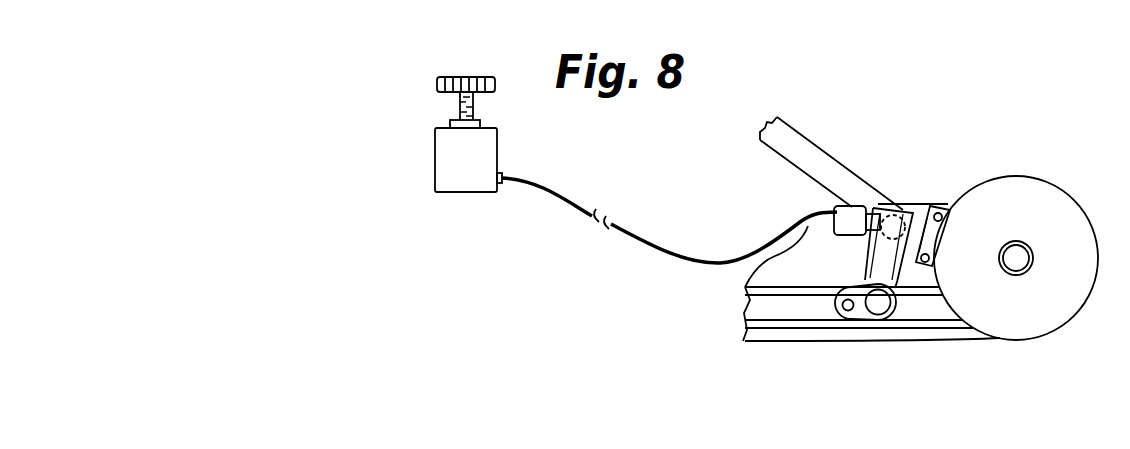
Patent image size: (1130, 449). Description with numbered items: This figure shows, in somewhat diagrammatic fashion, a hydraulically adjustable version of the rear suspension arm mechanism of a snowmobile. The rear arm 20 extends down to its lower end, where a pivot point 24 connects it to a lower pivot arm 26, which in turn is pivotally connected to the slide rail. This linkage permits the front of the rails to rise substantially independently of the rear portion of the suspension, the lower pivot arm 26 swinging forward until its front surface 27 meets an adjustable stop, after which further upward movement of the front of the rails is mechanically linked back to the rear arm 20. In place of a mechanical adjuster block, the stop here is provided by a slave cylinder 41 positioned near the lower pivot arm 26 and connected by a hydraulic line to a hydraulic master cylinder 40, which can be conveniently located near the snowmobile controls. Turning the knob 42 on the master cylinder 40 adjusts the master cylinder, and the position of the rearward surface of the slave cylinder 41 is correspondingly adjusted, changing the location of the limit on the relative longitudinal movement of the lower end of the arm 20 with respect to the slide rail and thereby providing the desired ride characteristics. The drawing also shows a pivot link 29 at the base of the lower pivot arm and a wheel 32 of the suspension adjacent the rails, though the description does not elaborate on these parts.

The rear arm 20 is at (830, 168).
The pivot point 24 is at (907, 204).
The lower pivot arm 26 is at (898, 266).
The front surface 27 is at (875, 263).
The lever 29 is at (878, 312).
The wheel 32 is at (928, 206).
The hydraulic master cylinder 40 is at (448, 158).
The slave cylinder 41 is at (836, 208).
The knob 42 is at (445, 78).